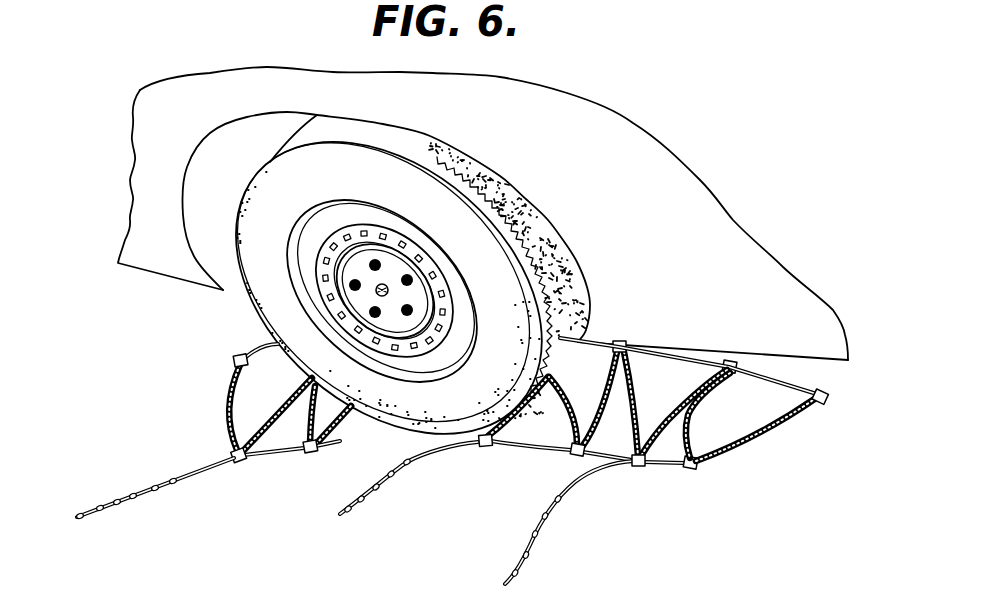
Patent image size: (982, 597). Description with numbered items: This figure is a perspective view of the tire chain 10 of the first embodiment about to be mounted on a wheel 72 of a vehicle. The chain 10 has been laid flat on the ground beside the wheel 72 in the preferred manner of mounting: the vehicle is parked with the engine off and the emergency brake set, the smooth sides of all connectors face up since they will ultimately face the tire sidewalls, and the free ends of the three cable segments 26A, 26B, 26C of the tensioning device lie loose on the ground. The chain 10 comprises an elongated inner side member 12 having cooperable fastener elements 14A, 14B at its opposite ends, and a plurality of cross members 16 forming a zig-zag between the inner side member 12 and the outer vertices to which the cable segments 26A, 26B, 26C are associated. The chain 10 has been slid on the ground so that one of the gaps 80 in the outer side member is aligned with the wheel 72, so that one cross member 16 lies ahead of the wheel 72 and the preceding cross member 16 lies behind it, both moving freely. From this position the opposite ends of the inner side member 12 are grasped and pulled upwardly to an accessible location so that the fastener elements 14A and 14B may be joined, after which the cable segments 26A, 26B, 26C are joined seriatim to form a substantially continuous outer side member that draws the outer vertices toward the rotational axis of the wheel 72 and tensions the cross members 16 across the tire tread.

The tire chain 10 is at (799, 442).
The inner side member 12 is at (790, 381).
The fastener element 14A is at (829, 402).
The fastener element 14B is at (234, 360).
The cross members 16 is at (770, 428).
The cable segment 26A is at (593, 478).
The cable segment 26B is at (447, 445).
The cable segment 26C is at (198, 472).
The wheel 72 is at (234, 315).
The gap 80 is at (338, 471).